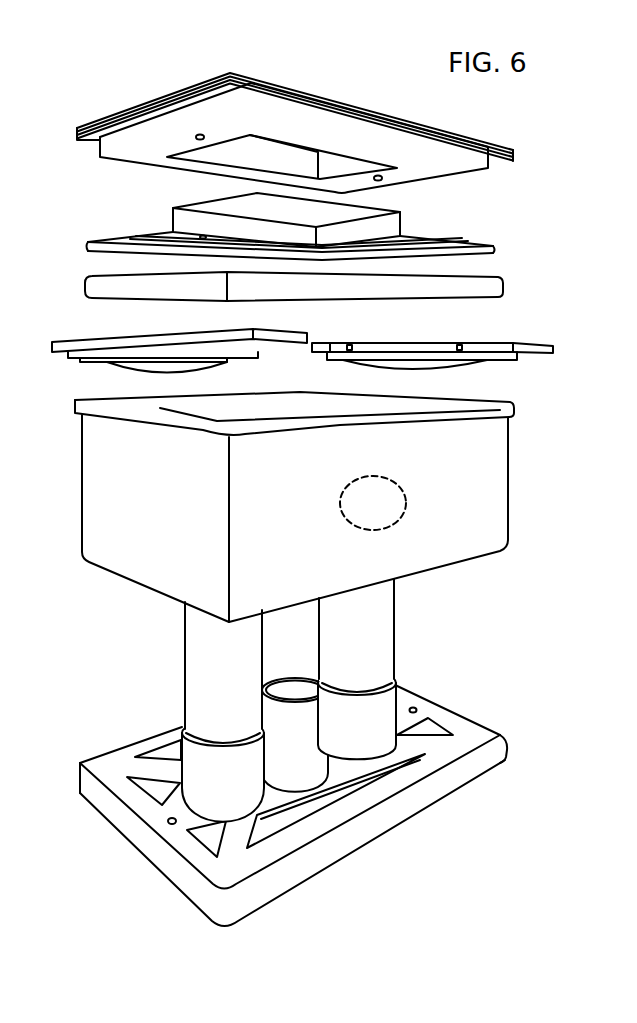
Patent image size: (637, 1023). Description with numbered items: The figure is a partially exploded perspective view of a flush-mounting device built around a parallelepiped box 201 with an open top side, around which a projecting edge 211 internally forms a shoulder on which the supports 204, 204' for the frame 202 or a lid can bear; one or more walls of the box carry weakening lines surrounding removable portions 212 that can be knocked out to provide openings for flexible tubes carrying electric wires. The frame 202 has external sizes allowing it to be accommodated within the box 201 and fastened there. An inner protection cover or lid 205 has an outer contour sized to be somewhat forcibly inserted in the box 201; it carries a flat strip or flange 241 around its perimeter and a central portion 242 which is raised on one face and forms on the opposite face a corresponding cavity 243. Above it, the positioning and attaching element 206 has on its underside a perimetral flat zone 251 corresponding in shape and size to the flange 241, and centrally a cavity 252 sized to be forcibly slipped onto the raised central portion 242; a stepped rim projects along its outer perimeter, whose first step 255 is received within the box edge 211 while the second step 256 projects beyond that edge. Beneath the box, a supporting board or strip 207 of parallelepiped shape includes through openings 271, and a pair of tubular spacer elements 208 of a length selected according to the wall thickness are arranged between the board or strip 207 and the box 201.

The box 201 is at (492, 497).
The frame 202 is at (95, 282).
The support 204 is at (177, 343).
The support 204' is at (432, 342).
The inner protection cover or lid 205 is at (487, 225).
The positioning and attaching element 206 is at (360, 87).
The supporting board or strip 207 is at (293, 804).
The spacer element 208 is at (332, 627).
The projecting edge 211 is at (503, 411).
The removable portion 212 is at (380, 495).
The flat strip or flange 241 is at (155, 223).
The central portion 242 is at (385, 222).
The cavity 243 is at (372, 250).
The flat zone 251 is at (452, 173).
The cavity 252 is at (257, 150).
The first step 255 is at (94, 139).
The second step 256 is at (104, 110).
The through opening 271 is at (428, 727).